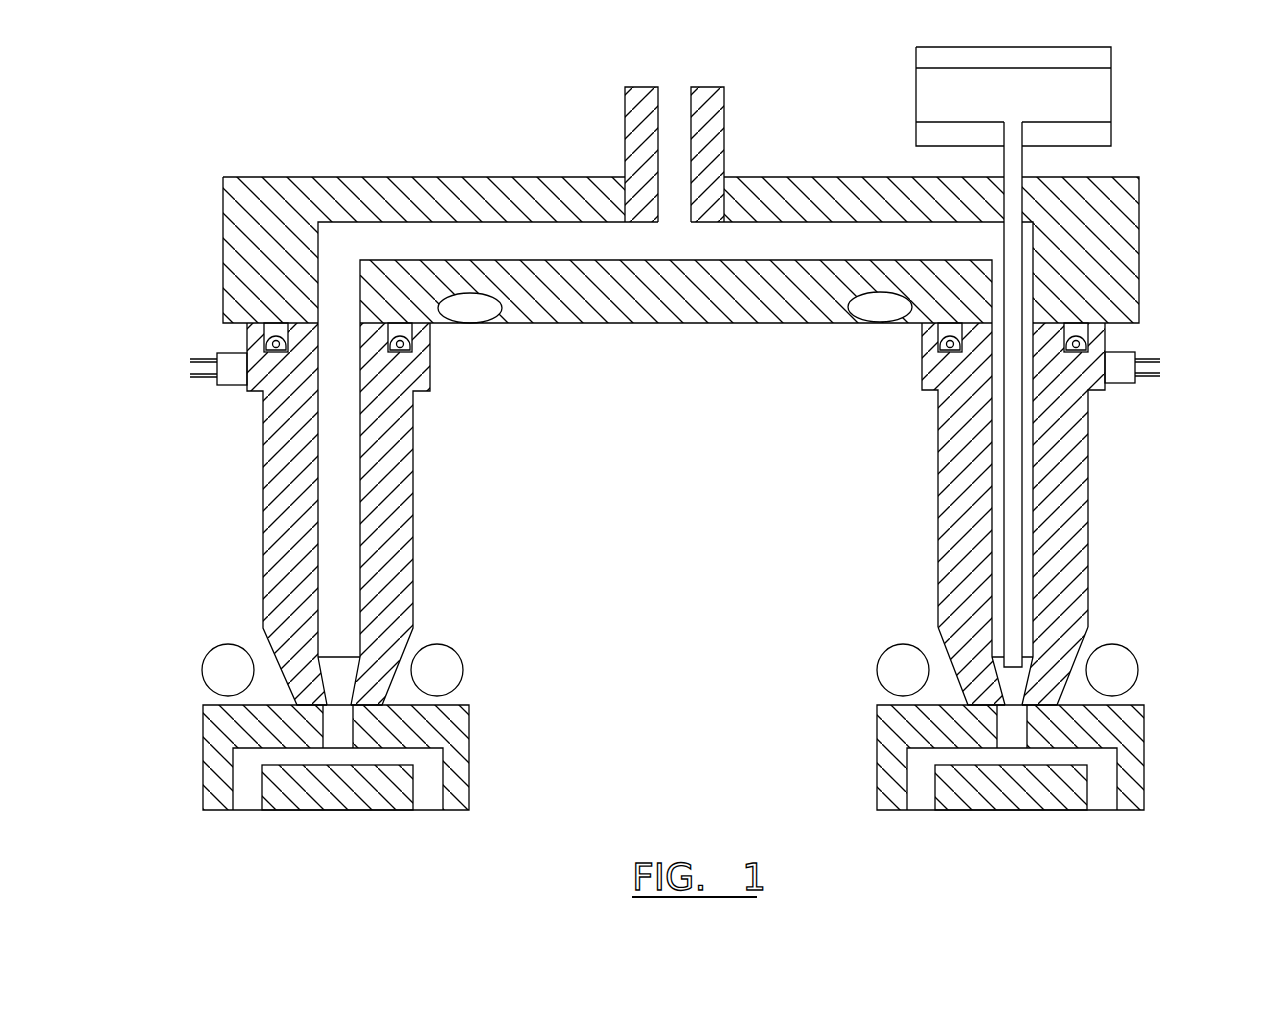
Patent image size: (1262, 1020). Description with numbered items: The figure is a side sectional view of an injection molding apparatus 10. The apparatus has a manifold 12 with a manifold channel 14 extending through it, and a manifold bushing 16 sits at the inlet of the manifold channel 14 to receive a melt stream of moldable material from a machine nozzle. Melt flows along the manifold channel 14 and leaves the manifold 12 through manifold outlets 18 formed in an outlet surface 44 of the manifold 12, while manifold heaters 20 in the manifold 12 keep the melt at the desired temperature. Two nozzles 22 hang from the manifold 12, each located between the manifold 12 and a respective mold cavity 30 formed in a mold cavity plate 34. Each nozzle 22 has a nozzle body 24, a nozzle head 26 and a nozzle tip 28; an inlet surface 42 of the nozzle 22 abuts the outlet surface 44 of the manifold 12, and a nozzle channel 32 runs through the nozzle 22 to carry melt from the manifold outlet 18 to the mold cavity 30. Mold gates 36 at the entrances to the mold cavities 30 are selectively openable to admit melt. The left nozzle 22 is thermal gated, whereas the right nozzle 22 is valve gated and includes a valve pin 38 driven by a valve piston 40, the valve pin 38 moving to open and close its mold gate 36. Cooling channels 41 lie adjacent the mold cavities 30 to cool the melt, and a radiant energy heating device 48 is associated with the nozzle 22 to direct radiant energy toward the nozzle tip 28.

The injection molding apparatus 10 is at (307, 122).
The manifold 12 is at (483, 197).
The manifold channel 14 is at (592, 255).
The manifold bushing 16 is at (710, 127).
The manifold outlet 18 is at (343, 326).
The manifold heater 20 is at (480, 307).
The nozzle 22 is at (381, 514).
The nozzle body 24 is at (972, 514).
The nozzle head 26 is at (921, 382).
The nozzle tip 28 is at (940, 638).
The mold cavity 30 is at (673, 743).
The nozzle channel 32 is at (357, 482).
The mold cavity plate 34 is at (437, 765).
The mold gate 36 is at (345, 727).
The valve pin 38 is at (1025, 498).
The valve piston 40 is at (1097, 100).
The cooling channel 41 is at (1123, 660).
The inlet surface 42 is at (1098, 320).
The outlet surface 44 is at (233, 325).
The radiant energy heating device 48 is at (922, 348).